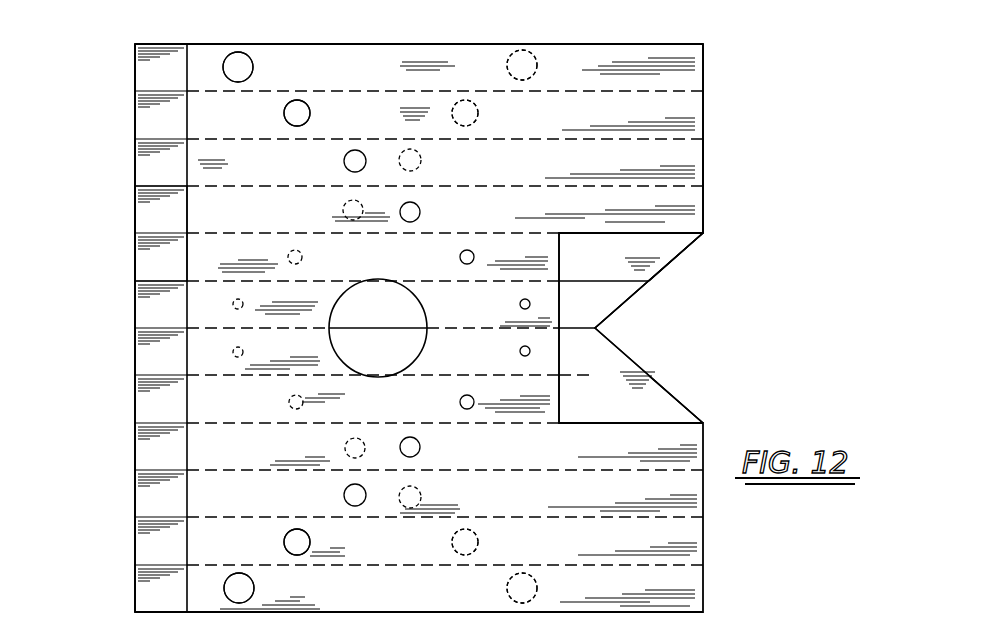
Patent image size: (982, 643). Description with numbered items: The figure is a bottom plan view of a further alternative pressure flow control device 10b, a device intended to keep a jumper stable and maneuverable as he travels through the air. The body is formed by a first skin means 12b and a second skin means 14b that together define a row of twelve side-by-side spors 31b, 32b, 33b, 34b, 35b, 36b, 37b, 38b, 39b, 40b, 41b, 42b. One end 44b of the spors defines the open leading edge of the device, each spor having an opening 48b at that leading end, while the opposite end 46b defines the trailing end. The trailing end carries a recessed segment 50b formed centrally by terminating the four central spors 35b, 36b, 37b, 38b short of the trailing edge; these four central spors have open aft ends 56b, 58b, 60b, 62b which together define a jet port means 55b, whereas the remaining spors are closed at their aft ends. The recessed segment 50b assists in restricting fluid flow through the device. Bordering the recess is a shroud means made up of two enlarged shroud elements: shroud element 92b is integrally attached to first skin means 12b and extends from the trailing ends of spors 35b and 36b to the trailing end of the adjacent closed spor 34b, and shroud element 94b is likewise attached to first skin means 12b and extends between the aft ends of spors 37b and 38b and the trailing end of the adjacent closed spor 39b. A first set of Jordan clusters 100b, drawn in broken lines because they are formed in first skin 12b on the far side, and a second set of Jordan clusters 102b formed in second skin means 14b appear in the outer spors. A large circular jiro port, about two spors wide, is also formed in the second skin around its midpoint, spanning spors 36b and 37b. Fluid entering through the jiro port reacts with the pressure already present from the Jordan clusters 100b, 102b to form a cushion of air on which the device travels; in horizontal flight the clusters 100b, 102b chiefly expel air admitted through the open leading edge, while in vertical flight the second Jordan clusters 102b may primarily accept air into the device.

The pressure flow control device 10b is at (122, 80).
The first skin means 12b is at (705, 54).
The second skin means 14b is at (690, 108).
The leading end of spor means 44b is at (135, 158).
The trailing end of spor means 46b is at (703, 160).
The opening 48b is at (140, 258).
The recessed segment 50b is at (644, 319).
The jet port means 55b is at (567, 269).
The notch wall segment 56b is at (559, 400).
The notch wall segment 58b is at (559, 355).
The notch wall segment 60b is at (559, 300).
The notch wall segment 62b is at (559, 242).
The shroud element 92b is at (677, 401).
The shroud element 94b is at (686, 248).
The first Jordan clusters 100b is at (478, 113).
The second Jordan clusters 102b is at (250, 78).
The spor 31b is at (398, 600).
The spor 32b is at (407, 554).
The spor 33b is at (283, 507).
The closed spor 34b is at (283, 459).
The central spor 35b is at (407, 414).
The central spor 36b is at (485, 364).
The central spor 37b is at (490, 314).
The central spor 38b is at (397, 265).
The closed spor 39b is at (293, 219).
The spor 40b is at (285, 172).
The spor 41b is at (372, 125).
The spor 42b is at (375, 79).